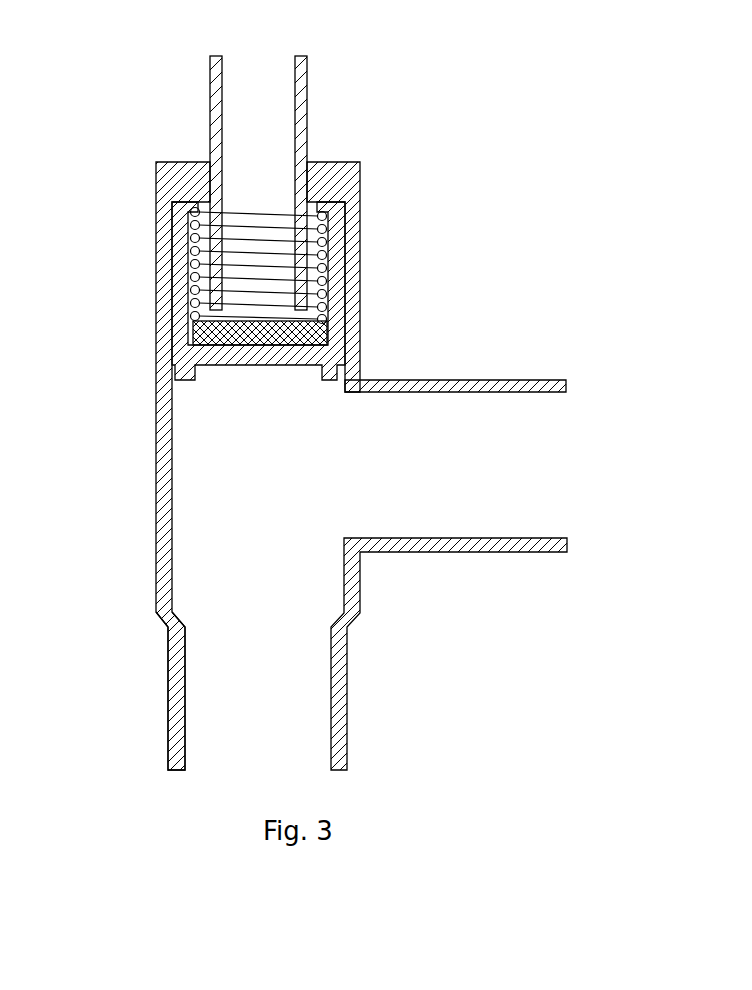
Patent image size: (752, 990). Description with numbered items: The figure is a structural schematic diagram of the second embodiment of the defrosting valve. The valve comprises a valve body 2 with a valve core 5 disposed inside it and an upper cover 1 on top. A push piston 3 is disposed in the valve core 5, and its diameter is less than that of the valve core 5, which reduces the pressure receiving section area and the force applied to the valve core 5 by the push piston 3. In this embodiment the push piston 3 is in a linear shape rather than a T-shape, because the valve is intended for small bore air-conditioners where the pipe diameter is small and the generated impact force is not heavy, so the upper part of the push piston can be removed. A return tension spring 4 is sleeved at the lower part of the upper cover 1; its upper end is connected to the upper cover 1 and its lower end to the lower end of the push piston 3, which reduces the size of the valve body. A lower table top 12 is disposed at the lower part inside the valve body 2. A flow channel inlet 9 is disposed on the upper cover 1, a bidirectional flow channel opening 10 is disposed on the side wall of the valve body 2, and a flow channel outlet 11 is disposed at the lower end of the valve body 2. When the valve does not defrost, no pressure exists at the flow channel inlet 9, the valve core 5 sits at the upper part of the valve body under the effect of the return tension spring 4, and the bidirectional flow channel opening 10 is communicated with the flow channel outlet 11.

The upper cover 1 is at (308, 160).
The valve body 2 is at (353, 248).
The push piston 3 is at (205, 332).
The return tension spring 4 is at (200, 275).
The valve core 5 is at (170, 308).
The flow channel inlet 9 is at (253, 103).
The bidirectional flow channel opening 10 is at (448, 482).
The flow channel outlet 11 is at (283, 745).
The lower table top 12 is at (173, 617).